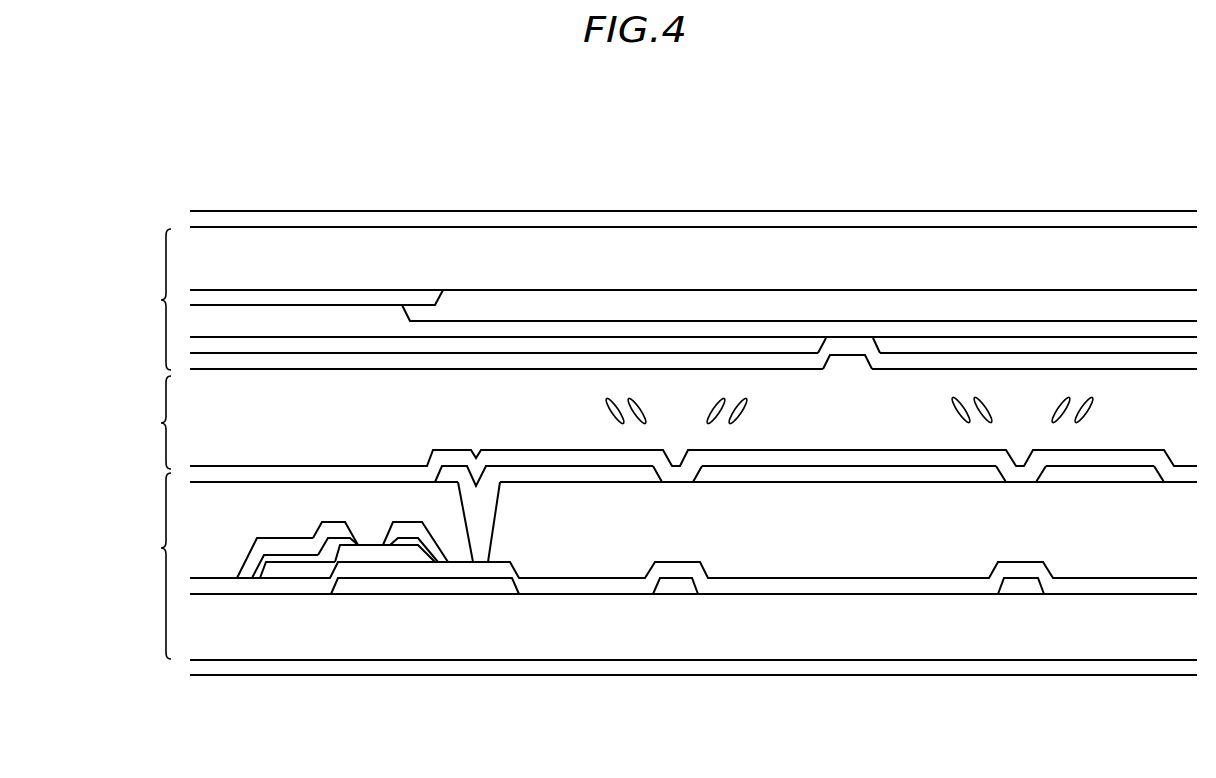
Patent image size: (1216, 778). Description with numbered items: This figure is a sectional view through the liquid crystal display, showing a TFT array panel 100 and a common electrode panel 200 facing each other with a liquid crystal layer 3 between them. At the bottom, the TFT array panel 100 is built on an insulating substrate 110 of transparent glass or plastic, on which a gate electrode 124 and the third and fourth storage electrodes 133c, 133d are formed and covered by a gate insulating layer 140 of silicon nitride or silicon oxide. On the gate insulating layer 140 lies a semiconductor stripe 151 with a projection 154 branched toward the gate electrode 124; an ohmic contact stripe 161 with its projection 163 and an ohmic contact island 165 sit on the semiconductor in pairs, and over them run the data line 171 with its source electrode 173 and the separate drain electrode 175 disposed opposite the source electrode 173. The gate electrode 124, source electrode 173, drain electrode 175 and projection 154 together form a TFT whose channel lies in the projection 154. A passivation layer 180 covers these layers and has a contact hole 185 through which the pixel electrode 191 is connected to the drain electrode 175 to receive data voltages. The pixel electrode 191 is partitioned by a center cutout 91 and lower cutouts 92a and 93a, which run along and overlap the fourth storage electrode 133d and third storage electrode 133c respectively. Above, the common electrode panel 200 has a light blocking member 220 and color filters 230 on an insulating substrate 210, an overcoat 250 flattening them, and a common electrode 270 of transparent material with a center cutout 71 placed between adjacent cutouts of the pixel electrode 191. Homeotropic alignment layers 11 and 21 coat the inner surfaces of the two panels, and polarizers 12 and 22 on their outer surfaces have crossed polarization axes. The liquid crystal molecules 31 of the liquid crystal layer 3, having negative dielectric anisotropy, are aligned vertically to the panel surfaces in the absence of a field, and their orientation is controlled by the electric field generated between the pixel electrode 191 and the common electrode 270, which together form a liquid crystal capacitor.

The polarizer 22 is at (205, 218).
The common electrode panel 200 is at (148, 299).
The insulating substrate 210 is at (611, 245).
The light blocking member 220 is at (350, 300).
The color filter 230 is at (512, 300).
The overcoat 250 is at (700, 330).
The common electrode 270 is at (782, 347).
The center cutout 71 is at (870, 362).
The alignment layer 21 is at (372, 360).
The liquid crystal molecules 31 is at (1062, 396).
The liquid crystal layer 3 is at (157, 422).
The alignment layer 11 is at (308, 473).
The pixel electrode 191 is at (566, 476).
The lower cutout 93a is at (670, 463).
The lower cutout 92a is at (1014, 450).
The center cutout 91 is at (1174, 462).
The contact hole 185 is at (468, 520).
The passivation layer 180 is at (590, 570).
The TFT array panel 100 is at (147, 566).
The drain electrode 175 is at (482, 566).
The ohmic contact island 165 is at (430, 570).
The projection 154 is at (372, 553).
The projection 163 is at (346, 541).
The source electrode 173 is at (340, 530).
The data line 171 is at (292, 548).
The ohmic contact stripe 161 is at (272, 566).
The semiconductor stripe 151 is at (308, 570).
The gate electrode 124 is at (400, 577).
The gate insulating layer 140 is at (847, 585).
The third storage electrode 133c is at (677, 585).
The fourth storage electrode 133d is at (1023, 585).
The insulating substrate 110 is at (915, 643).
The polarizer 12 is at (205, 668).